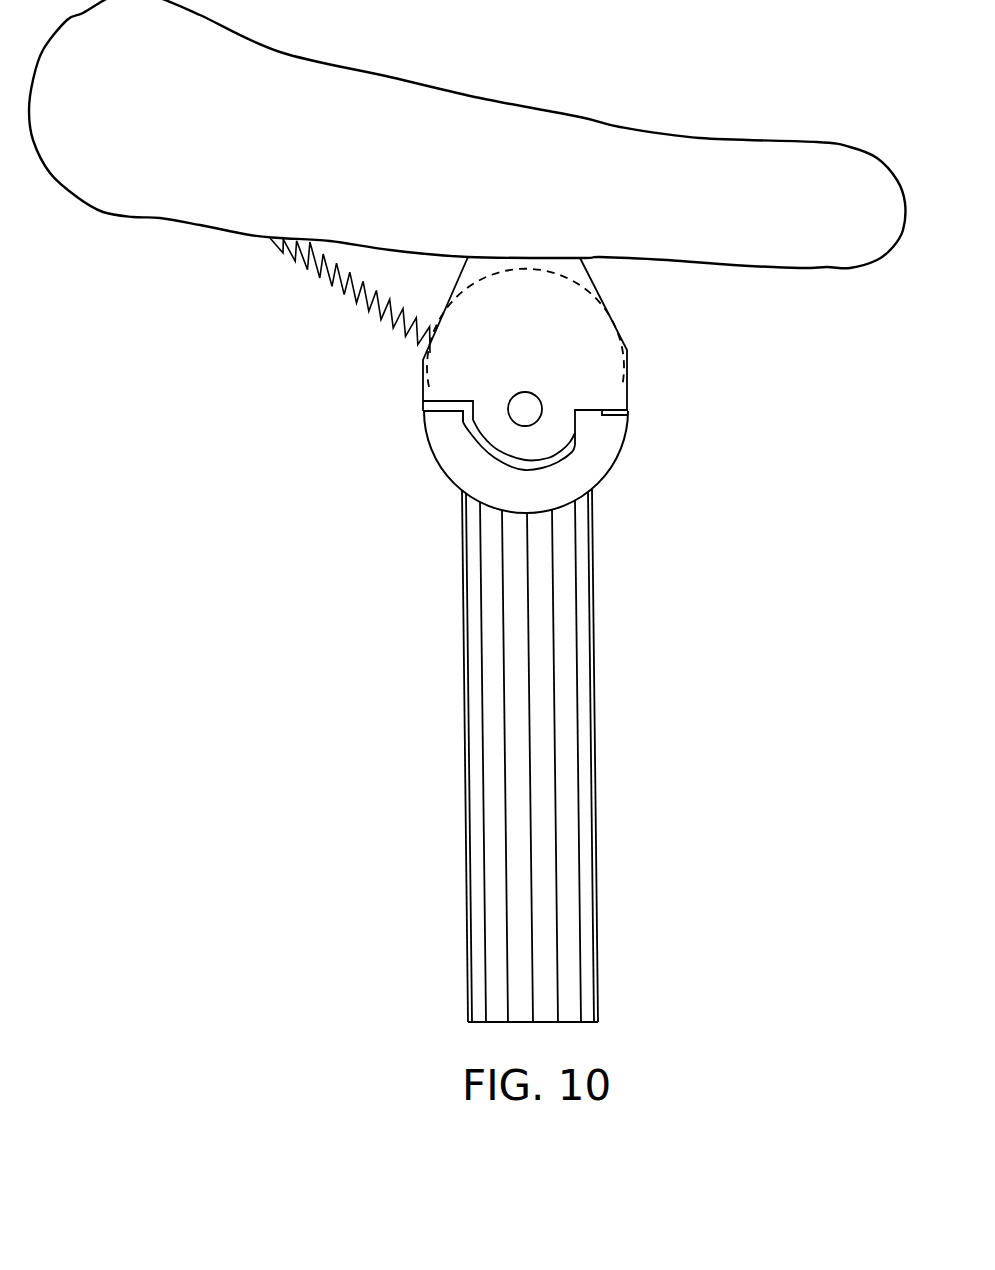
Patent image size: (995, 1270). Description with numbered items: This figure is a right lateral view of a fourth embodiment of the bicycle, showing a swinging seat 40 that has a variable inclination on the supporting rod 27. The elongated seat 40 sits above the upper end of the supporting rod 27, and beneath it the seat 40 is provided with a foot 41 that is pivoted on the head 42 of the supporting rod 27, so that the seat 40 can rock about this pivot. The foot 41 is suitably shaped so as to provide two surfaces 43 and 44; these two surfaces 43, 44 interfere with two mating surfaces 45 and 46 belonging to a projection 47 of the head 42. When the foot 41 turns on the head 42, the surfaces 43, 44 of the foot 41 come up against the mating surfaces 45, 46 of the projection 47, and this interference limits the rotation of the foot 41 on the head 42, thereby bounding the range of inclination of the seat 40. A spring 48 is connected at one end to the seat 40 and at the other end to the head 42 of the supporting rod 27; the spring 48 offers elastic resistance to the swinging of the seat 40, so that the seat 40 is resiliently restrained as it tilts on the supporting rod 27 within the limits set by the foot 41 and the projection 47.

The supporting rod 27 is at (598, 763).
The swinging seat 40 is at (670, 132).
The foot 41 is at (600, 300).
The head 42 is at (597, 442).
The surface 43 is at (425, 401).
The surface 44 is at (603, 414).
The mating surface 45 is at (445, 405).
The mating surface 46 is at (597, 453).
The projection 47 is at (448, 453).
The spring 48 is at (343, 292).